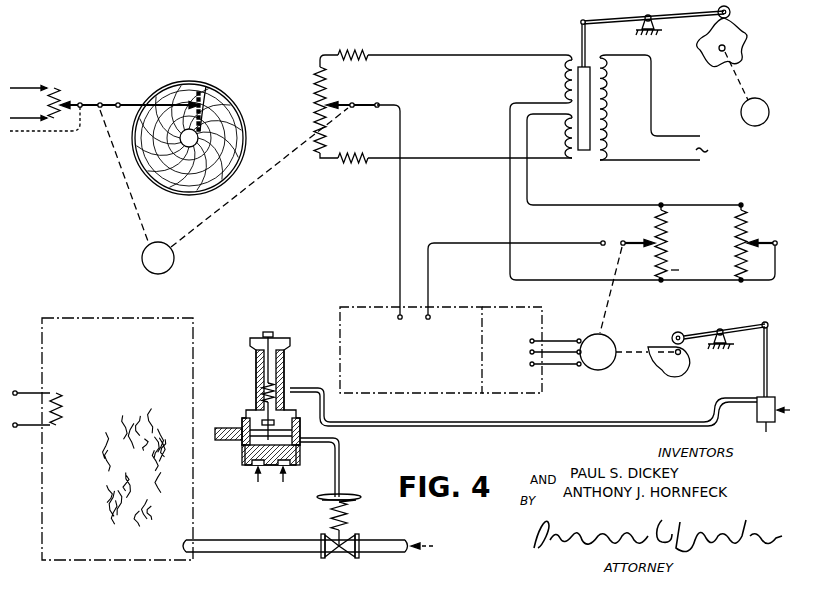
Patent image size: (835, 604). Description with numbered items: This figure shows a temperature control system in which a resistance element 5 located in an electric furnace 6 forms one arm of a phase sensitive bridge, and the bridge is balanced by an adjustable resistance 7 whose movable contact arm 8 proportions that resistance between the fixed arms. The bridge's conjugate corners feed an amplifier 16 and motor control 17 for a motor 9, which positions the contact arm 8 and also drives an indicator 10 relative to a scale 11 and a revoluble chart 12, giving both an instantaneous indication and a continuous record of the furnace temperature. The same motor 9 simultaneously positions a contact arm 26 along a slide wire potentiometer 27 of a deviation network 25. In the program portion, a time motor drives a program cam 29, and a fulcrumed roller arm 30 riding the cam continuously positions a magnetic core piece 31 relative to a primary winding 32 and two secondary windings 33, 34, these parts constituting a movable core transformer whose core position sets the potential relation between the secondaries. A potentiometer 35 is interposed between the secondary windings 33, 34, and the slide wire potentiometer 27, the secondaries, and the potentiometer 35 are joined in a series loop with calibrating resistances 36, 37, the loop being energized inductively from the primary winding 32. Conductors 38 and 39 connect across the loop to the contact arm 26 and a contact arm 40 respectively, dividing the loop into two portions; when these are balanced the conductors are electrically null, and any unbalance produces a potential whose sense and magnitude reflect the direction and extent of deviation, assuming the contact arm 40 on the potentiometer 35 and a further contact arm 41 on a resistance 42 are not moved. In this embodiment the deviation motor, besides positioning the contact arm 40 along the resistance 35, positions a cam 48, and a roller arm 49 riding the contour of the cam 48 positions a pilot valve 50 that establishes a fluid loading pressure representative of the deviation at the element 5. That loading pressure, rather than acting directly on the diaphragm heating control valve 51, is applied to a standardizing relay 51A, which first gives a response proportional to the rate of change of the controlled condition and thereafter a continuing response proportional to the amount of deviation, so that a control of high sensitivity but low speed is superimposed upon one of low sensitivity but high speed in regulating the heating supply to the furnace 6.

The resistance element 5 is at (45, 409).
The electric furnace 6 is at (138, 355).
The adjustable resistance 7 is at (35, 103).
The movable contact arm 8 is at (80, 103).
The motor 9 is at (142, 259).
The indicator 10 is at (166, 98).
The scale 11 is at (206, 86).
The revoluble chart 12 is at (230, 118).
The amplifier 16 is at (411, 350).
The motor control 17 is at (549, 350).
The deviation network 25 is at (466, 122).
The contact arm 26 is at (362, 104).
The slide wire potentiometer 27 is at (313, 88).
The program cam 29 is at (705, 70).
The fulcrumed roller arm 30 is at (617, 18).
The magnetic core piece 31 is at (578, 68).
The primary winding 32 is at (654, 107).
The secondary winding 33 is at (639, 170).
The secondary winding 34 is at (634, 159).
The potentiometer 35 is at (655, 229).
The calibrating resistance 36 is at (355, 52).
The calibrating resistance 37 is at (352, 164).
The conductor 38 is at (402, 216).
The conductor 39 is at (456, 244).
The contact arm 40 is at (612, 249).
The contact arm 41 is at (772, 242).
The resistance 42 is at (735, 236).
The cam 48 is at (670, 371).
The roller arm 49 is at (698, 335).
The pilot valve 50 is at (757, 400).
The heating control valve 51 is at (385, 526).
The standardizing relay 51A is at (248, 377).